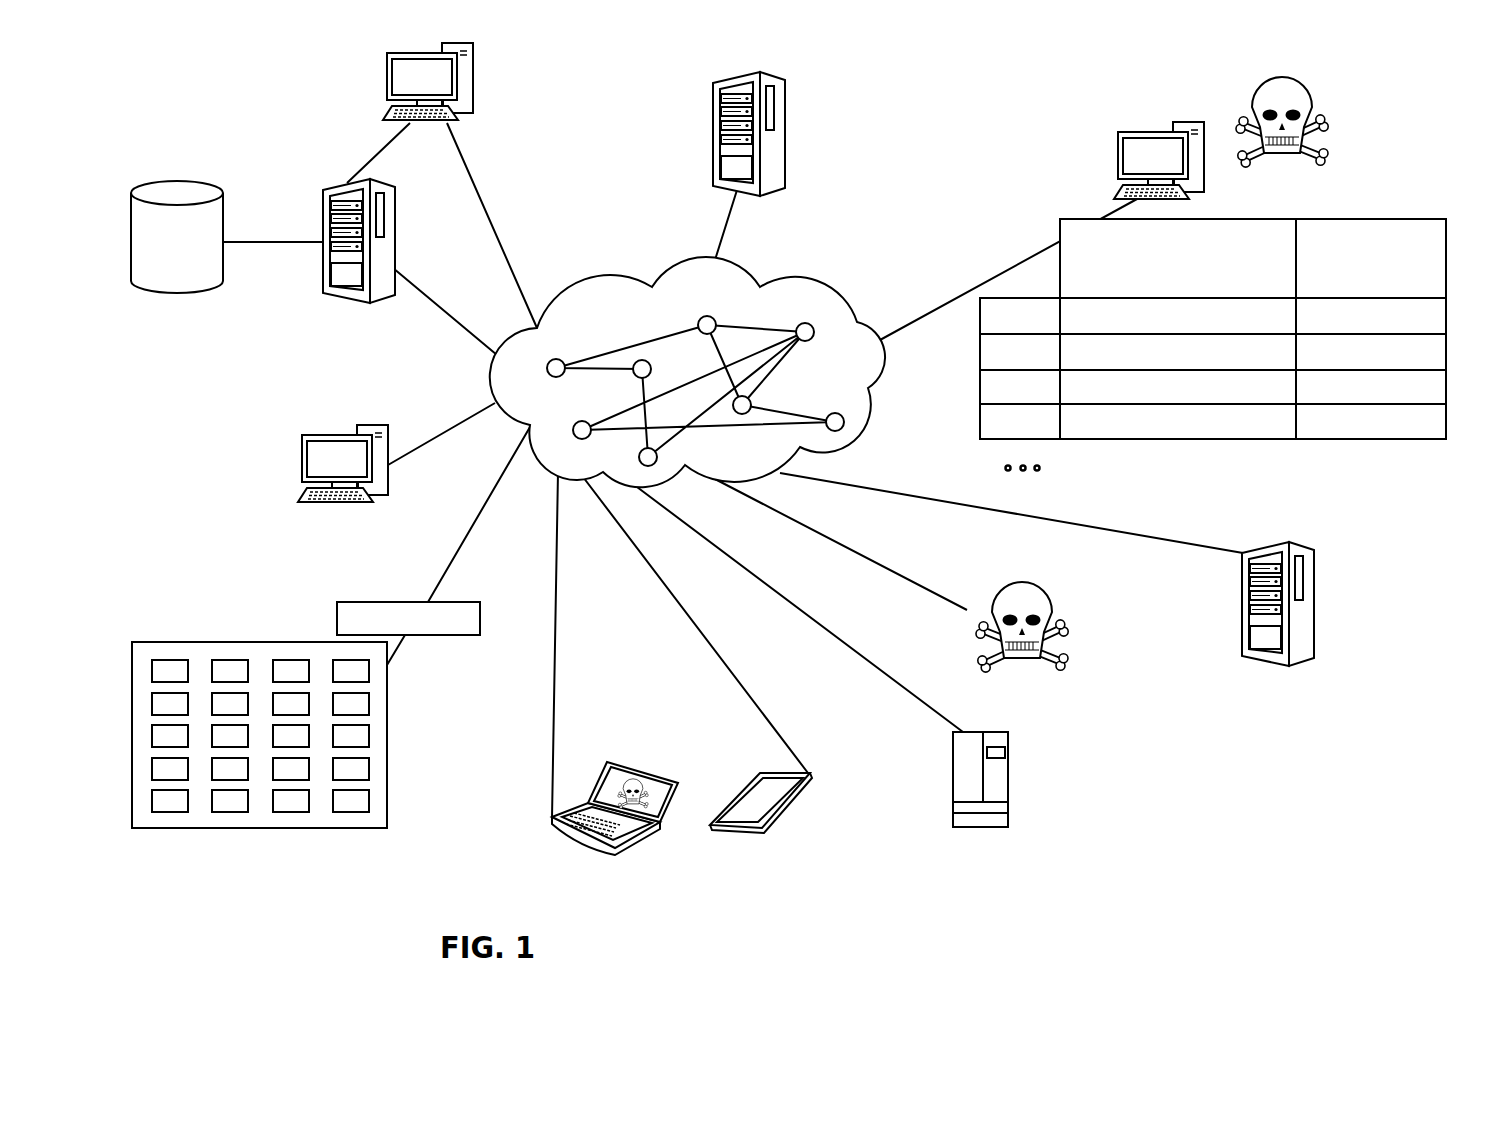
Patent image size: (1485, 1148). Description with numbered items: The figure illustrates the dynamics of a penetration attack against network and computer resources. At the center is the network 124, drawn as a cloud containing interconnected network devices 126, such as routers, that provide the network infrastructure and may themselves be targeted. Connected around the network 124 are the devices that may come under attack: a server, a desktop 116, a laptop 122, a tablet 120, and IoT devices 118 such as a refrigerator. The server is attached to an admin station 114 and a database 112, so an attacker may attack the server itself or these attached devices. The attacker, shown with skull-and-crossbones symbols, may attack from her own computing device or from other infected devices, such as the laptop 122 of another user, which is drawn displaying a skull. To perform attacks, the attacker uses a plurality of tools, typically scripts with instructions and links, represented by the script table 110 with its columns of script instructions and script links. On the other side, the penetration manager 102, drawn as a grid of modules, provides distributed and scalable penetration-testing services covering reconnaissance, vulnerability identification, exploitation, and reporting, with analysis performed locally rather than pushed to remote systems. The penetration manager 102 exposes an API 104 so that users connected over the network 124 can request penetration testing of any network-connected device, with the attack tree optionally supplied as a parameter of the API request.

The penetration manager 102 is at (198, 642).
The API 104 is at (337, 620).
The script table 110 is at (1398, 193).
The database 112 is at (180, 178).
The admin station 114 is at (472, 80).
The desktop 116 is at (300, 465).
The IoT devices 118 is at (1008, 775).
The tablet 120 is at (798, 795).
The laptop 122 is at (635, 845).
The network 124 is at (809, 277).
The network devices 126 is at (637, 458).